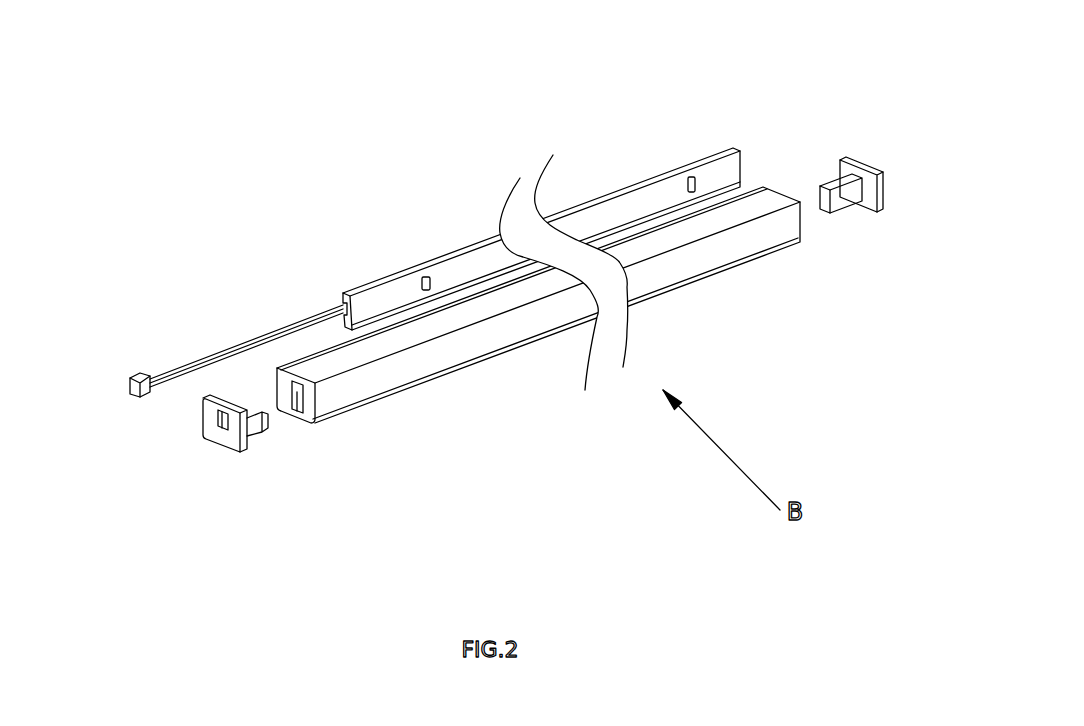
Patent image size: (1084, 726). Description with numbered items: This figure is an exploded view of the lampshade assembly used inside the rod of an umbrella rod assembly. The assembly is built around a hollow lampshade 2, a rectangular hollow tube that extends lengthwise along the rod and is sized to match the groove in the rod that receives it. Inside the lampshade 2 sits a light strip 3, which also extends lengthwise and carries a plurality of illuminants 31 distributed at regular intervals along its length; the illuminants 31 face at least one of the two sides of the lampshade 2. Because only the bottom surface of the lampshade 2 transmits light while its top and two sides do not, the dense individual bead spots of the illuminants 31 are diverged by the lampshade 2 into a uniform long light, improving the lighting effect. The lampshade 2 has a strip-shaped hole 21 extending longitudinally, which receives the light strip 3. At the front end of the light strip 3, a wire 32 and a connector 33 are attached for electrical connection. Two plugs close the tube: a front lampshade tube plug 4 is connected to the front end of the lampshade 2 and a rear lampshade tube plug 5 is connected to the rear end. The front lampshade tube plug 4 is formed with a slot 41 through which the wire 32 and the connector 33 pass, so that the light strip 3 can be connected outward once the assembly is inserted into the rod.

The lampshade 2 is at (538, 347).
The strip-shaped hole 21 is at (298, 407).
The light strip 3 is at (541, 211).
The illuminant 31 is at (693, 177).
The wire 32 is at (260, 333).
The connector 33 is at (136, 374).
The front lampshade tube plug 4 is at (187, 466).
The slot 41 is at (217, 423).
The rear lampshade tube plug 5 is at (880, 170).